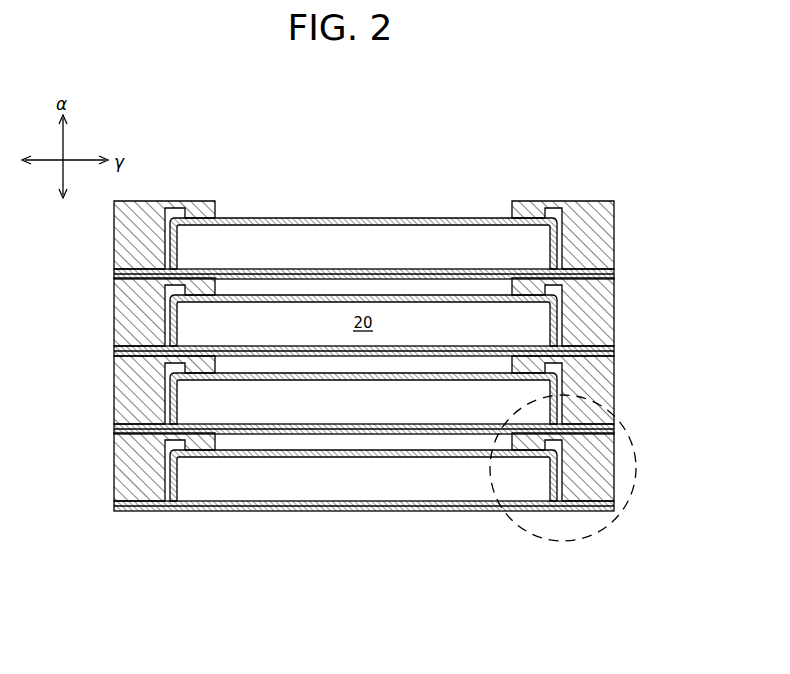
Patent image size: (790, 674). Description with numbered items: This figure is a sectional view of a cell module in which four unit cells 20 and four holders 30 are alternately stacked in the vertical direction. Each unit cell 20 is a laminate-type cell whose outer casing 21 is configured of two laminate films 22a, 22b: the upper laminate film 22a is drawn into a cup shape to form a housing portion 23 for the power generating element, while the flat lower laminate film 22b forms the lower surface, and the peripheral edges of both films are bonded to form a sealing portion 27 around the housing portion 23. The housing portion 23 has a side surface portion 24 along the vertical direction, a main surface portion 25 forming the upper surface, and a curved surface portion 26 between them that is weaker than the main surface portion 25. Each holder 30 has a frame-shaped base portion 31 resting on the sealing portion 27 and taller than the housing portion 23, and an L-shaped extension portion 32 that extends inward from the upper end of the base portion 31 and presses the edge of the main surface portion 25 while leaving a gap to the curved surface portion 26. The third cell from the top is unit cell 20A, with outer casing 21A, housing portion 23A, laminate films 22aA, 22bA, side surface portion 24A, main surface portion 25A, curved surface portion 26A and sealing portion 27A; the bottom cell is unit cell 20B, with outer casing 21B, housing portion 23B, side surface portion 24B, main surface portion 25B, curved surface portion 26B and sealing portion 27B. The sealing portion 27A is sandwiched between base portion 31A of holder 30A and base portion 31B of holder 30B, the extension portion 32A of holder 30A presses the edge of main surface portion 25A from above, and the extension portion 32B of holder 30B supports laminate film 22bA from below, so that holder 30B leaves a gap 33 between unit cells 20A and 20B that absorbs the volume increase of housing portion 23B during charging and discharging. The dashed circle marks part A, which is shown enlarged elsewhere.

The unit cell 20 is at (353, 254).
The unit cell 20A is at (349, 409).
The unit cell 20B is at (349, 486).
The outer casing 21 is at (363, 209).
The housing portion 23 is at (387, 217).
The laminate film 22a is at (363, 209).
The laminate film 22b is at (363, 209).
The side surface portion 24 is at (151, 211).
The main surface portion 25 is at (237, 217).
The curved surface portion 26 is at (170, 207).
The sealing portion 27 is at (614, 262).
The holder 30 is at (563, 188).
The base portion 31 is at (588, 200).
The extension portion 32 is at (541, 206).
The outer casing 21A is at (441, 362).
The housing portion 23A is at (440, 372).
The laminate film 22aA is at (441, 362).
The laminate film 22bA is at (444, 465).
The side surface portion 24A is at (135, 385).
The main surface portion 25A is at (160, 366).
The curved surface portion 26A is at (166, 368).
The sealing portion 27A is at (322, 492).
The holder 30A is at (616, 374).
The base portion 31A is at (592, 378).
The extension portion 32A is at (556, 366).
The outer casing 21B is at (444, 475).
The housing portion 23B is at (590, 456).
The side surface portion 24B is at (135, 466).
The main surface portion 25B is at (162, 444).
The curved surface portion 26B is at (166, 447).
The sealing portion 27B is at (140, 511).
The holder 30B is at (563, 523).
The base portion 31B is at (590, 511).
The extension portion 32B is at (538, 508).
The gap 33 is at (446, 440).
The part A is at (628, 516).